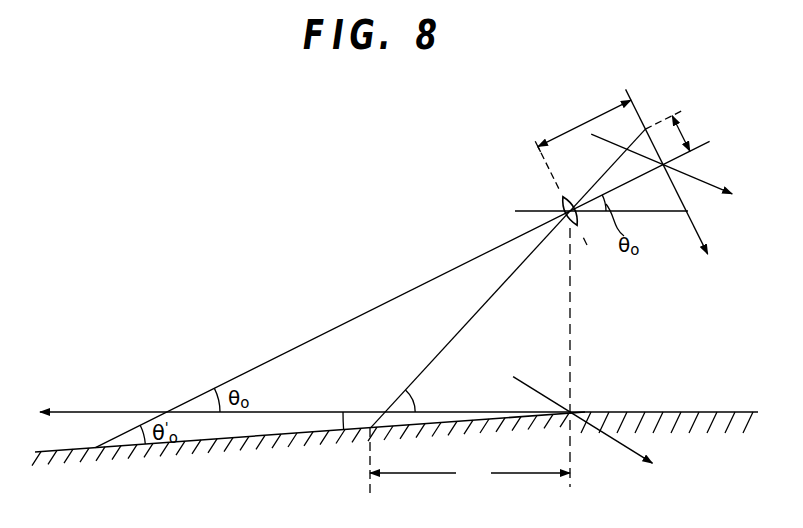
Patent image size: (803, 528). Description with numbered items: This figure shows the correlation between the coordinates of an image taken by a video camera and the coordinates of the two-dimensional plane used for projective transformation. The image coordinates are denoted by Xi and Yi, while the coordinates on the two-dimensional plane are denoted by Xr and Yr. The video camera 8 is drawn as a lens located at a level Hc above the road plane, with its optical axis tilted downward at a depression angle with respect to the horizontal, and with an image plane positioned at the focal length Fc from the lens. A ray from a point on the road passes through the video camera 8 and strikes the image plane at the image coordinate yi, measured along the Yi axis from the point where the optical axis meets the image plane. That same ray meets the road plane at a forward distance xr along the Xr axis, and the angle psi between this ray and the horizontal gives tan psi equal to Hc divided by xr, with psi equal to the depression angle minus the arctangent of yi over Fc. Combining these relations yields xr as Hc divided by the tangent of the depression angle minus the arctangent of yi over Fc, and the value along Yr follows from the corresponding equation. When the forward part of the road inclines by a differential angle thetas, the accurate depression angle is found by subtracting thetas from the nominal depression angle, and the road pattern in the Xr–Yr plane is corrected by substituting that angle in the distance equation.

The video camera 8 is at (557, 197).
The focal length Fc is at (583, 142).
The level Hc is at (587, 357).
The distance on two-dimensional plane xr is at (470, 460).
The image coordinate yi is at (676, 130).
The image coordinate axis Xi is at (675, 173).
The image coordinate axis Yi is at (672, 187).
The two-dimensional plane coordinate axis Xr is at (385, 410).
The two-dimensional plane coordinate axis Yr is at (590, 437).
The angle psi is at (419, 396).
The differential angle thetas is at (342, 425).